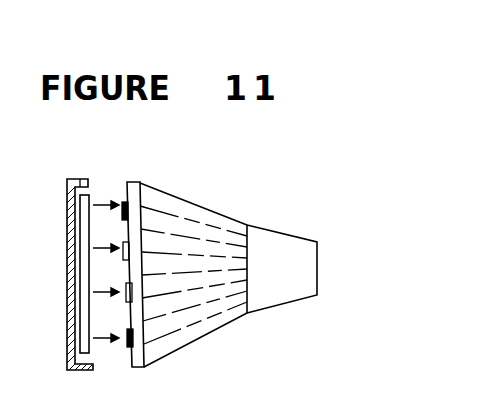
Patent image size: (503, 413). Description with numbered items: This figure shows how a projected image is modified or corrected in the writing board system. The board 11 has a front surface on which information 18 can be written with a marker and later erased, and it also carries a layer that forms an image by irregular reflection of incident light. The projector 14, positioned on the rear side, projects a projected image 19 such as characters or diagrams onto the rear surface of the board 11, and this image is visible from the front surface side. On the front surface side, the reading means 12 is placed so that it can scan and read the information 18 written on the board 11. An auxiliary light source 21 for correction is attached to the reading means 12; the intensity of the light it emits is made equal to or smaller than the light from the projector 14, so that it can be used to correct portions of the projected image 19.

The board 11 is at (133, 192).
The reading means 12 is at (78, 182).
The projector 14 is at (272, 253).
The information 18 is at (128, 291).
The projected image 19 is at (128, 212).
The auxiliary light source 21 is at (85, 232).